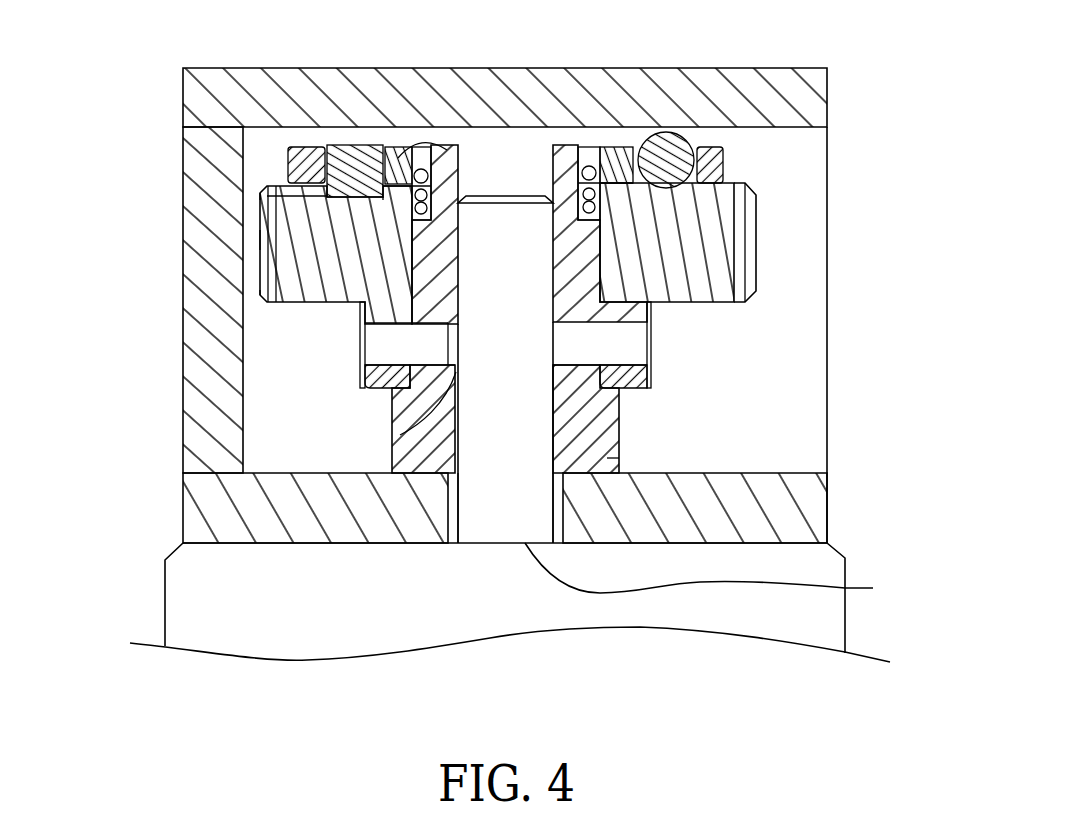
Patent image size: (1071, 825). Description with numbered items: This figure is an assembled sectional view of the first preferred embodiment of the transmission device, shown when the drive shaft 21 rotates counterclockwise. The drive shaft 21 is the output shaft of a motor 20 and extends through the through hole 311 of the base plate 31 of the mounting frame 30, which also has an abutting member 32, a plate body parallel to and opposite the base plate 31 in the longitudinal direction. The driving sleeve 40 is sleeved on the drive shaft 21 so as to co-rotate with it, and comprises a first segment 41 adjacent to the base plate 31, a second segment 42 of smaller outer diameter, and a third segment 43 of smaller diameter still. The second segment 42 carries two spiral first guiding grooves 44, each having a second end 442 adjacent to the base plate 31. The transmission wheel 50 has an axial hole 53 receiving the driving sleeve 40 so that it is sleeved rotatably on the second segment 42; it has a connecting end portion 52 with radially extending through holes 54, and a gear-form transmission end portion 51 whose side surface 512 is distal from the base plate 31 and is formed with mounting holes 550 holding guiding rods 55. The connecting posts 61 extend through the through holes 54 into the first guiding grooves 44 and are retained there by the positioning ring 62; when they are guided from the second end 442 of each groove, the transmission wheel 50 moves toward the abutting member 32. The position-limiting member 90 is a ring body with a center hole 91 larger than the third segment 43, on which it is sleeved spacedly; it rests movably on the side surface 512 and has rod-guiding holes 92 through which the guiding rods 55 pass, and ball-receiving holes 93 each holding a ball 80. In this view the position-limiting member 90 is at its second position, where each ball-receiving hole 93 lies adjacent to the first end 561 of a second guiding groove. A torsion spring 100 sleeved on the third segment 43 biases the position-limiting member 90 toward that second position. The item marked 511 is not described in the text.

The motor 20 is at (164, 600).
The drive shaft 21 is at (717, 573).
The mounting frame 30 is at (184, 400).
The base plate 31 is at (322, 483).
The through hole 311 is at (447, 523).
The abutting member 32 is at (628, 83).
The driving sleeve 40 is at (621, 430).
The first segment 41 is at (607, 458).
The second segment 42 is at (595, 294).
The third segment 43 is at (562, 150).
The first guiding groove 44 is at (392, 404).
The second end 442 is at (392, 436).
The transmission wheel 50 is at (259, 217).
The transmission end portion 51 is at (260, 240).
The yoke lower edge 511 is at (260, 300).
The side surface 512 is at (263, 177).
The connecting end portion 52 is at (372, 313).
The axial hole 53 is at (412, 258).
The through hole 54 is at (365, 378).
The guiding rod 55 is at (362, 145).
The mounting hole 550 is at (262, 189).
The first end 561 is at (675, 183).
The connecting post 61 is at (377, 352).
The positioning ring 62 is at (652, 330).
The ball 80 is at (698, 180).
The position-limiting member 90 is at (284, 160).
The center hole 91 is at (403, 147).
The rod-guiding hole 92 is at (308, 145).
The ball-receiving hole 93 is at (716, 143).
The torsion spring 100 is at (433, 192).